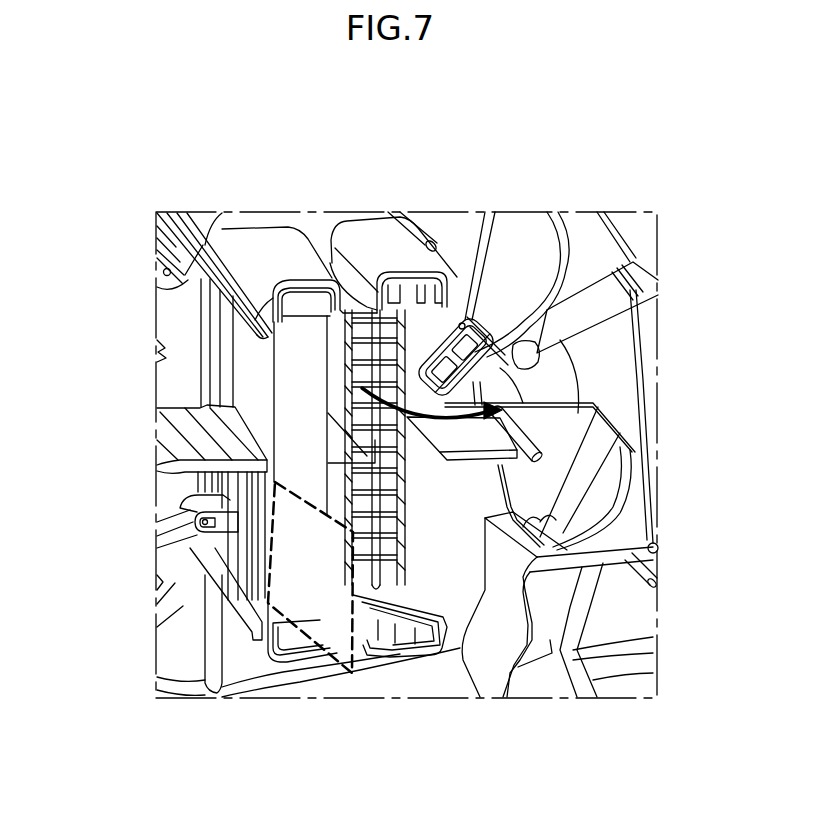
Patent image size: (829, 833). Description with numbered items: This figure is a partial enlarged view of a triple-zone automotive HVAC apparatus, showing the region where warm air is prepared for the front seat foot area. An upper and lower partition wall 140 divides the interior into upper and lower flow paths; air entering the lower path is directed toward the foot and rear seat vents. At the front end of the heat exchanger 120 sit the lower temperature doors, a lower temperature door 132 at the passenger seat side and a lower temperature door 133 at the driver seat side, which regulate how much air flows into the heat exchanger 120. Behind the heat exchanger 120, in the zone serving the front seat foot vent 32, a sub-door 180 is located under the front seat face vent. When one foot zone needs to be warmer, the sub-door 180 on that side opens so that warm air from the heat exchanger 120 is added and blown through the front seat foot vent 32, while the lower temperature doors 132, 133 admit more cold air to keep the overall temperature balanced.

The front seat foot vent 32 is at (555, 382).
The heat exchanger 120 is at (360, 643).
The lower temperature door 132 is at (225, 562).
The lower temperature door 133 is at (335, 660).
The upper and lower partition wall 140 is at (188, 425).
The sub-door 180 is at (465, 322).